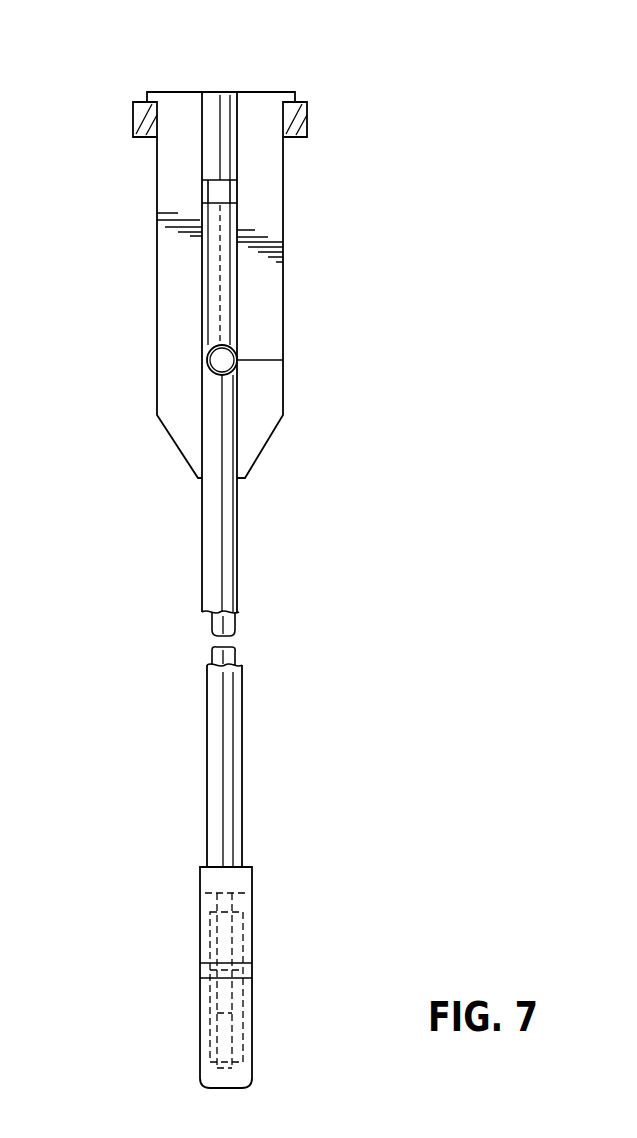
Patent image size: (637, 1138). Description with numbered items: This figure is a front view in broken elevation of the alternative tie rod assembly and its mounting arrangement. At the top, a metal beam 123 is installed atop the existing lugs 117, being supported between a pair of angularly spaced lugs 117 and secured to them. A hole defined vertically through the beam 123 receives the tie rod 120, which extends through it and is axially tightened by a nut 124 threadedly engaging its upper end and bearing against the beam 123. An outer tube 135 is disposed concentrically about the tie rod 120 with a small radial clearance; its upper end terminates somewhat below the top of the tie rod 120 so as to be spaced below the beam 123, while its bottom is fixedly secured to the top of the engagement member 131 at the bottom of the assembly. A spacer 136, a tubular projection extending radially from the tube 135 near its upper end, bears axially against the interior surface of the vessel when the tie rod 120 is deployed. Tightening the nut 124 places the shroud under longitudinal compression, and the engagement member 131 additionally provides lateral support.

The lugs 117 is at (135, 122).
The tie rod 120 is at (237, 656).
The metal beam 123 is at (280, 244).
The nut 124 is at (210, 110).
The engagement member 131 is at (288, 988).
The outer tube 135 is at (233, 553).
The spacer 136 is at (205, 380).